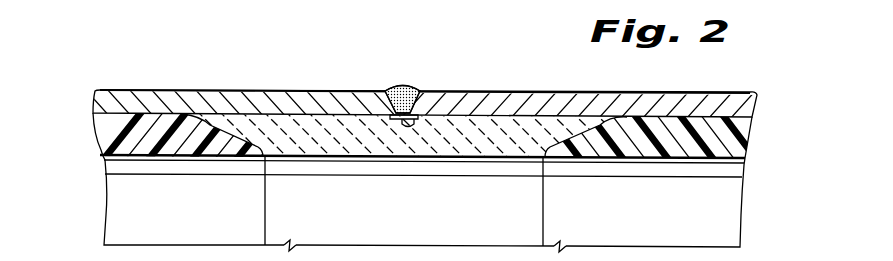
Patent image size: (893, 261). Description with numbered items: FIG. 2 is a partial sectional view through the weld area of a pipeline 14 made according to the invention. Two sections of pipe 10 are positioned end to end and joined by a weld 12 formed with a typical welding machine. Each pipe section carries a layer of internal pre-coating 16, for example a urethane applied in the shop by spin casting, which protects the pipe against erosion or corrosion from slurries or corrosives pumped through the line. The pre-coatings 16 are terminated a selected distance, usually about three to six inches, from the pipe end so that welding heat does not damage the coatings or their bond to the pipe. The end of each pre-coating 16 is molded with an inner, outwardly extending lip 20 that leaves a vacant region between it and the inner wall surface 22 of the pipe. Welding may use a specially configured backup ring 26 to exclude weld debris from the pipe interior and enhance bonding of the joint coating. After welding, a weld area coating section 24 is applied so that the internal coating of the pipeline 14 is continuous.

The pipe 10 is at (152, 92).
The weld 12 is at (405, 90).
The pipeline 14 is at (718, 93).
The internal pre-coating 16 is at (130, 137).
The lip 20 is at (230, 158).
The inner wall surface 22 is at (291, 114).
The weld area coating section 24 is at (413, 158).
The backup ring 26 is at (423, 120).